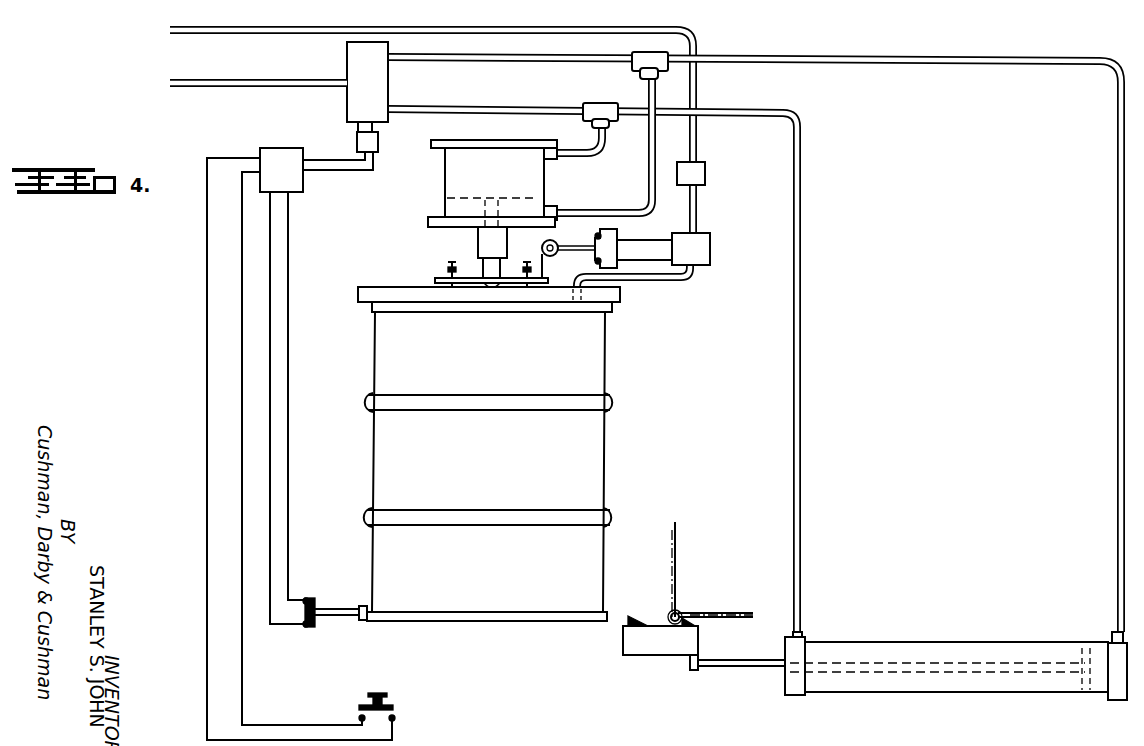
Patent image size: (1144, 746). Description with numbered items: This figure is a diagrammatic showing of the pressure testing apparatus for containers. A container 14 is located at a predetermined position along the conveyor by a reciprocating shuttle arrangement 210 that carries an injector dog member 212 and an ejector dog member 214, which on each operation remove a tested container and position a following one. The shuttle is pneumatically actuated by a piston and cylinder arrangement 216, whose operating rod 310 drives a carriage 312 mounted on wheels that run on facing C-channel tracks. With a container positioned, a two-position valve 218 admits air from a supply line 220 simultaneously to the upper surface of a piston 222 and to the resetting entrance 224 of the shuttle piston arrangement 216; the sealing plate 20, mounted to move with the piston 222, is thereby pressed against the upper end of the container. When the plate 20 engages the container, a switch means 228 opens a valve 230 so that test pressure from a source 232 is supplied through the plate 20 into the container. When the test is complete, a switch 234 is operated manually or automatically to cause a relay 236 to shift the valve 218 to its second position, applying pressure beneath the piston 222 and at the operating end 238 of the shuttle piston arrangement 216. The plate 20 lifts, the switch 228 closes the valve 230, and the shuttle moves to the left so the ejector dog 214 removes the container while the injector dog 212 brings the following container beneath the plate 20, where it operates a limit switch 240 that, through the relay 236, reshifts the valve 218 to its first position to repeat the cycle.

The container 14 is at (608, 380).
The sealing plate 20 is at (366, 287).
The reciprocating shuttle arrangement 210 is at (686, 598).
The injector dog member 212 is at (695, 616).
The ejector dog member 214 is at (633, 618).
The piston and cylinder arrangement 216 is at (930, 642).
The valve 218 is at (401, 82).
The supply line 220 is at (214, 93).
The piston 222 is at (535, 200).
The resetting entrance 224 is at (803, 632).
The switch means 228 is at (541, 247).
The valve 230 is at (712, 253).
The source of test pressure 232 is at (378, 27).
The switch 234 is at (397, 710).
The relay 236 is at (278, 148).
The operating end 238 is at (1114, 606).
The limit switch 240 is at (328, 620).
The operating rod 310 is at (716, 662).
The carriage 312 is at (648, 652).